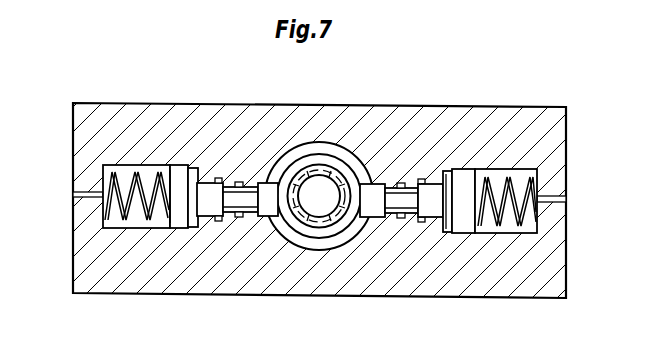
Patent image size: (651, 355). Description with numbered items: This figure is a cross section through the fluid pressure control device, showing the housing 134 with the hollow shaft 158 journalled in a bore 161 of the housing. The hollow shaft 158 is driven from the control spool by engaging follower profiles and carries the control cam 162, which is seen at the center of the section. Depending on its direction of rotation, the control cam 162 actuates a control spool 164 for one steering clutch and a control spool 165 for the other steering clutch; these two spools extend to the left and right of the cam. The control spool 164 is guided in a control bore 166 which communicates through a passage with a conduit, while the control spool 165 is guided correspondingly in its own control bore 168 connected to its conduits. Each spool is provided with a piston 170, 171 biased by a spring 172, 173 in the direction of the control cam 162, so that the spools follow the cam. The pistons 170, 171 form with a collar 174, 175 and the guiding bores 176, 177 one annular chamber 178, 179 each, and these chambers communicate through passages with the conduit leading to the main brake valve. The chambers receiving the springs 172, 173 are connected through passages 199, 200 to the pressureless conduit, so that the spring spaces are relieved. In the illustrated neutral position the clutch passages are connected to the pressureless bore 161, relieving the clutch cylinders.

The housing 134 is at (95, 282).
The hollow shaft 158 is at (320, 213).
The bore 161 is at (337, 253).
The control cam 162 is at (317, 182).
The control spool 164 is at (423, 210).
The control spool 165 is at (210, 197).
The control bore 166 is at (388, 184).
The left rod 168 is at (257, 182).
The piston 170 is at (463, 169).
The piston 171 is at (178, 166).
The spring 172 is at (510, 215).
The spring 173 is at (128, 165).
The collar 174 is at (447, 232).
The collar 175 is at (185, 228).
The guiding bore 176 is at (520, 169).
The guiding bore 177 is at (150, 163).
The annular chamber 178 is at (447, 171).
The annular chamber 179 is at (197, 165).
The passage 199 is at (553, 202).
The passage 200 is at (88, 191).